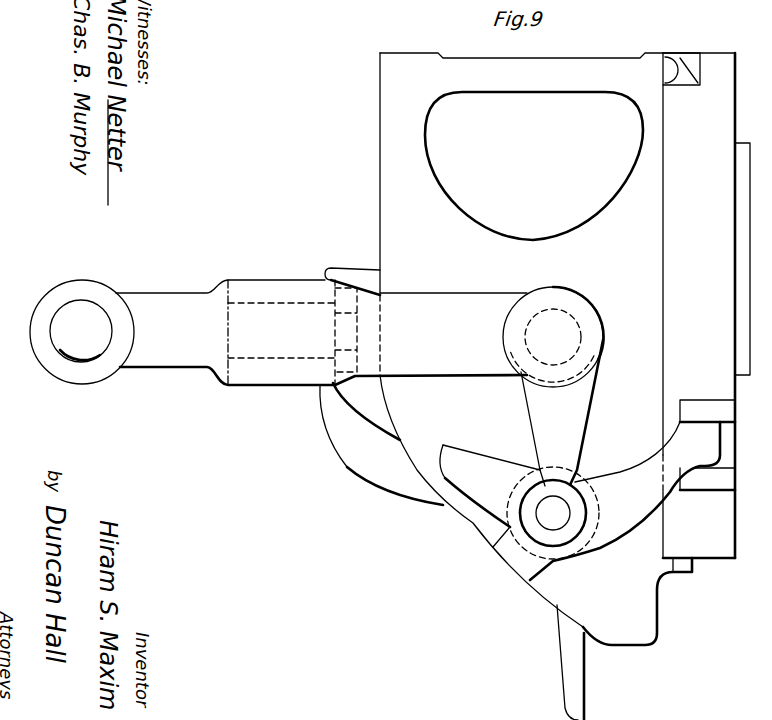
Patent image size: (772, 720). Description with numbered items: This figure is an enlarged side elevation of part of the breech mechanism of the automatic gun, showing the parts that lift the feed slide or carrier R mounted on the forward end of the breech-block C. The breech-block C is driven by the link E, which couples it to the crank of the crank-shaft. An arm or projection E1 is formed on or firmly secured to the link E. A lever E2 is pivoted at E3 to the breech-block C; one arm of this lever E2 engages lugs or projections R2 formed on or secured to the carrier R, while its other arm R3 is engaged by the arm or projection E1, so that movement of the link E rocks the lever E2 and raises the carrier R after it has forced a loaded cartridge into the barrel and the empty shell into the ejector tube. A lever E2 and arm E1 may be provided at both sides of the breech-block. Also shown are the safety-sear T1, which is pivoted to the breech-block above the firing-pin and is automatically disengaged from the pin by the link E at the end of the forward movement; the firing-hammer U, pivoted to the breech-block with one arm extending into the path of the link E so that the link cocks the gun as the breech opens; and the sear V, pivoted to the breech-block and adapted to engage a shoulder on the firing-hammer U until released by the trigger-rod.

The breech-block C is at (557, 349).
The feed slide or carrier R is at (706, 305).
The lugs or projections R2 is at (701, 408).
The link E is at (278, 332).
The safety-sear T1 is at (345, 268).
The arm or projection E1 is at (553, 386).
The lever E2 is at (625, 501).
The pivot E3 is at (553, 513).
The arm of lever R3 is at (490, 496).
The firing-hammer U is at (381, 444).
The sear V is at (577, 683).